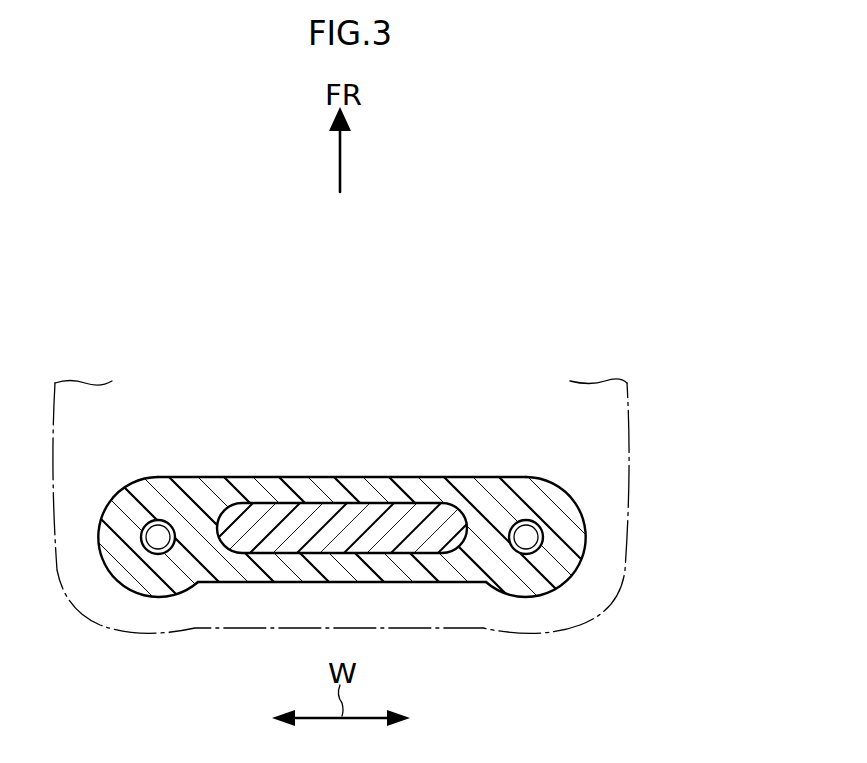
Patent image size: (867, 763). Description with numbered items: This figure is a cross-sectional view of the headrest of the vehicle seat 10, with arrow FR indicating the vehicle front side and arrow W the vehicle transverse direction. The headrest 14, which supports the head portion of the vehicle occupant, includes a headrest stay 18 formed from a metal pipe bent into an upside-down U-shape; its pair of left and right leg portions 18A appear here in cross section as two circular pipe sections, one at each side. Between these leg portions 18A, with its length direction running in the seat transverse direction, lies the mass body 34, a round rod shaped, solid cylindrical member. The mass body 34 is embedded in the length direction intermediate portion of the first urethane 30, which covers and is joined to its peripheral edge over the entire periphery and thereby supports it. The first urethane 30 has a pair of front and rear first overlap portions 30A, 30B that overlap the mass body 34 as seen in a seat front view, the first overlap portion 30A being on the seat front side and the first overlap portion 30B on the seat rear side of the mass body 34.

The vehicle seat 10 is at (393, 416).
The headrest 14 is at (645, 502).
The headrest stay 18 is at (366, 488).
The leg portions 18A is at (152, 520).
The first urethane 30 is at (341, 504).
The first overlap portion 30A is at (320, 476).
The first overlap portion 30B is at (342, 583).
The mass body 34 is at (270, 505).